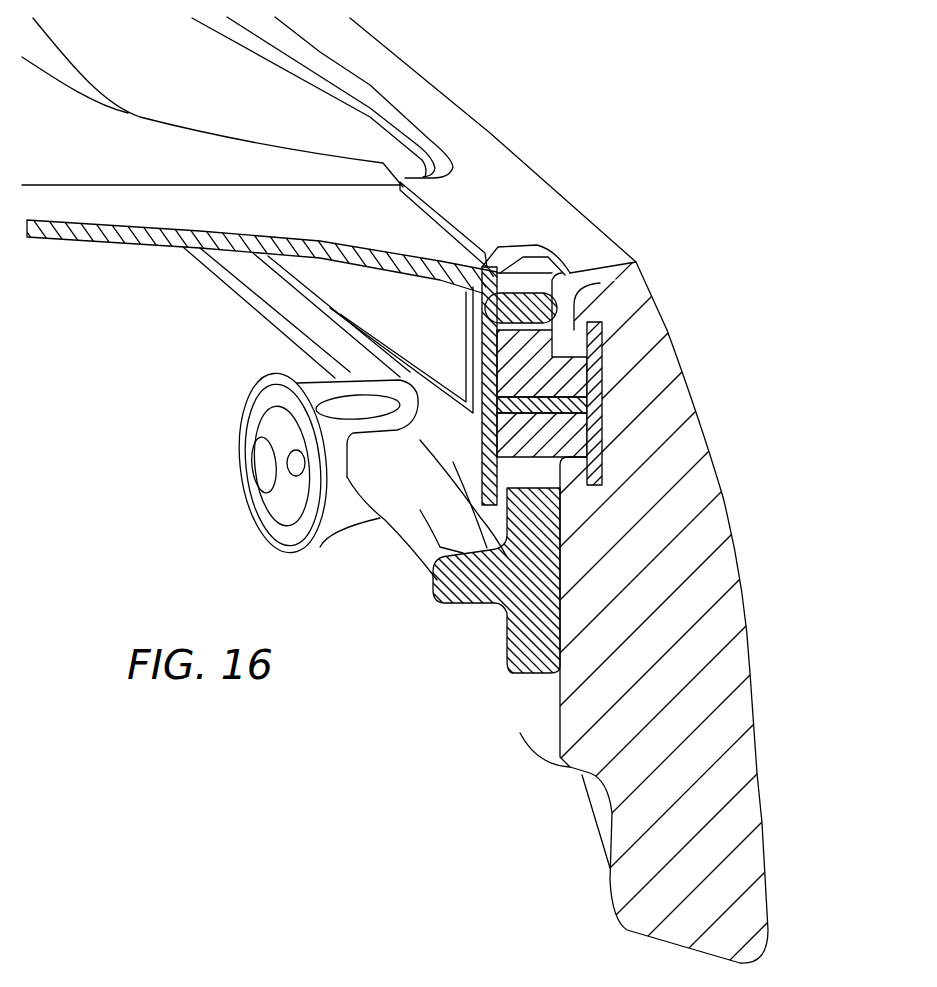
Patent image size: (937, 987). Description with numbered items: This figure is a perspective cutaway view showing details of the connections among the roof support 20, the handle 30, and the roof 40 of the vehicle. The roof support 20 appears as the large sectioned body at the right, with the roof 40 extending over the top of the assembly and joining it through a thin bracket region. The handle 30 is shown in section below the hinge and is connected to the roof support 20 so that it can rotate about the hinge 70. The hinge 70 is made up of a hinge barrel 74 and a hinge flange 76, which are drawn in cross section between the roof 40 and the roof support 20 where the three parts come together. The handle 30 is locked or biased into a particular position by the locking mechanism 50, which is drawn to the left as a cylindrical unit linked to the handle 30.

The roof support 20 is at (680, 545).
The handle 30 is at (484, 582).
The roof 40 is at (420, 233).
The locking mechanism 50 is at (260, 424).
The hinge 70 is at (523, 338).
The hinge barrel 74 is at (600, 283).
The hinge flange 76 is at (597, 395).